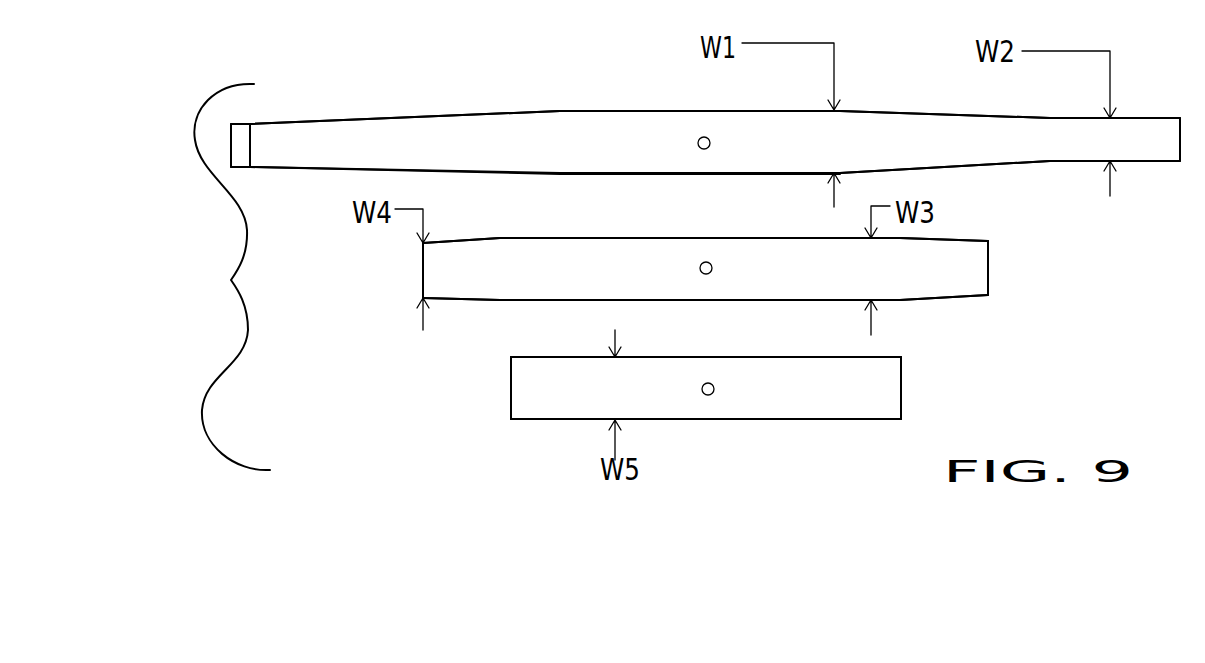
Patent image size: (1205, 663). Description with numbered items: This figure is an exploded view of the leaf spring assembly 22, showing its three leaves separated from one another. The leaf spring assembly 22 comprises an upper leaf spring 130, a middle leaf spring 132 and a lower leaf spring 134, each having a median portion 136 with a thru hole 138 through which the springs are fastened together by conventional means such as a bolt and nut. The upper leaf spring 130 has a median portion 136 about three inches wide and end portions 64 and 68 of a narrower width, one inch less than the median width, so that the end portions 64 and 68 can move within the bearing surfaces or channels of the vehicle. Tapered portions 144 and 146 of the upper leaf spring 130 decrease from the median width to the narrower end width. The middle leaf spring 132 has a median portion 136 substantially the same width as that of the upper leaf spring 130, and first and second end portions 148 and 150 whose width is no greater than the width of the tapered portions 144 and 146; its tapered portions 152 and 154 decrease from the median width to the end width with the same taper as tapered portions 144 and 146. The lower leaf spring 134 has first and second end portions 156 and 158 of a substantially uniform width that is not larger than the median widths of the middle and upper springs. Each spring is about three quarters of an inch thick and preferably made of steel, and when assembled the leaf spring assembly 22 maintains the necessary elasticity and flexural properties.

The leaf spring assembly 22 is at (227, 277).
The end portion 64 is at (281, 122).
The end portion 68 is at (1165, 117).
The upper leaf spring 130 is at (505, 173).
The middle leaf spring 132 is at (582, 300).
The lower leaf spring 134 is at (800, 423).
The median portion 136 is at (633, 143).
The thru hole 138 is at (712, 137).
The tapered portion 144 is at (437, 138).
The tapered portion 146 is at (960, 142).
The first end portion 148 is at (421, 277).
The second end portion 150 is at (983, 261).
The tapered portion 152 is at (440, 270).
The tapered portion 154 is at (934, 268).
The first end portion 156 is at (512, 390).
The second end portion 158 is at (901, 366).